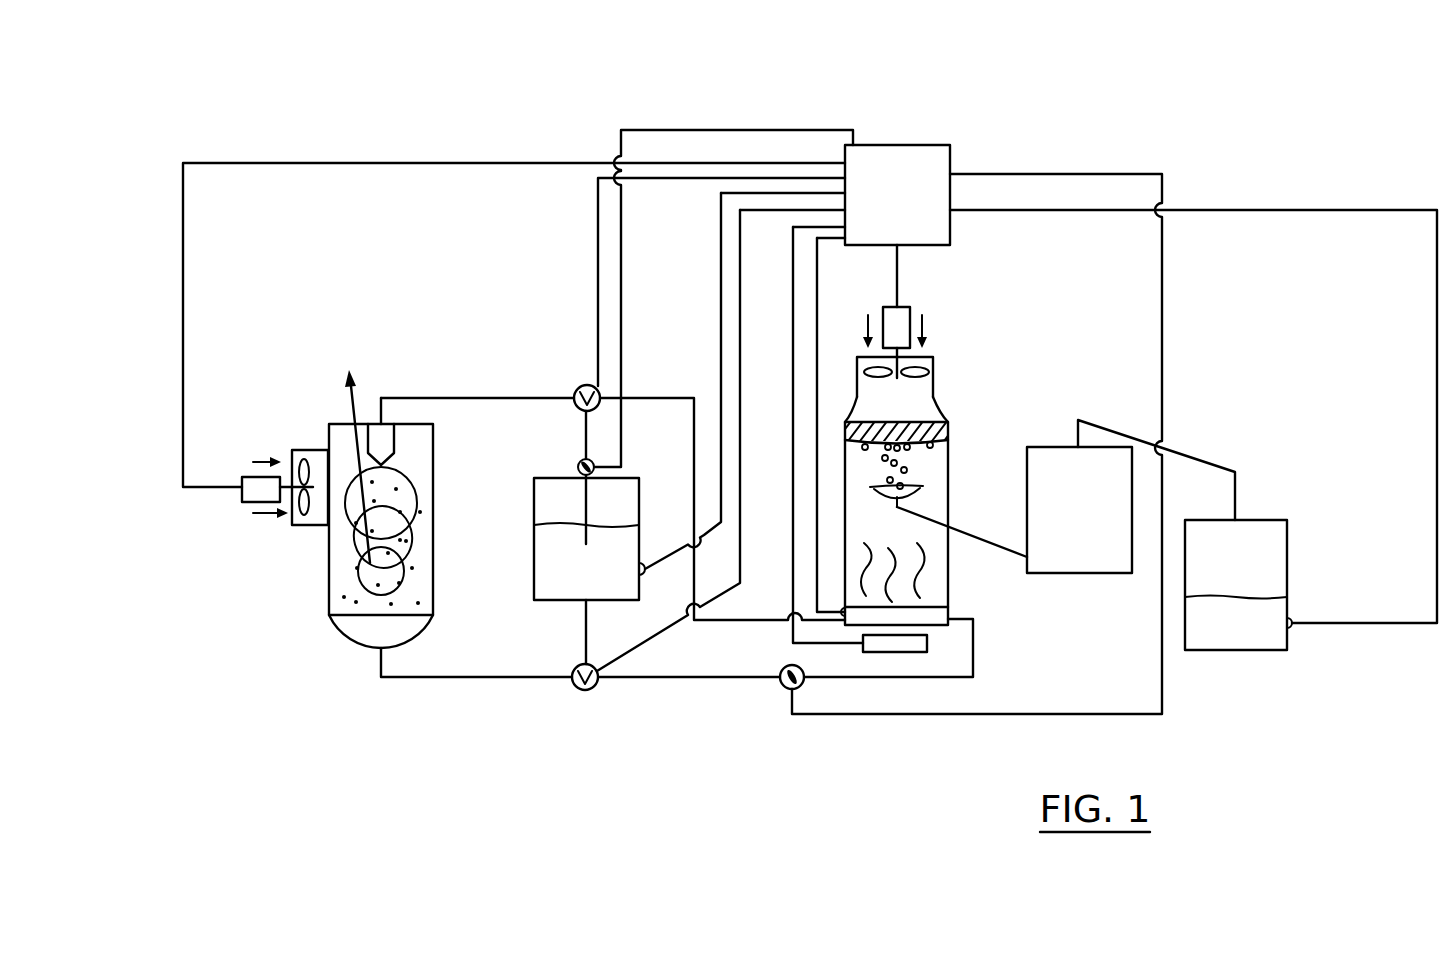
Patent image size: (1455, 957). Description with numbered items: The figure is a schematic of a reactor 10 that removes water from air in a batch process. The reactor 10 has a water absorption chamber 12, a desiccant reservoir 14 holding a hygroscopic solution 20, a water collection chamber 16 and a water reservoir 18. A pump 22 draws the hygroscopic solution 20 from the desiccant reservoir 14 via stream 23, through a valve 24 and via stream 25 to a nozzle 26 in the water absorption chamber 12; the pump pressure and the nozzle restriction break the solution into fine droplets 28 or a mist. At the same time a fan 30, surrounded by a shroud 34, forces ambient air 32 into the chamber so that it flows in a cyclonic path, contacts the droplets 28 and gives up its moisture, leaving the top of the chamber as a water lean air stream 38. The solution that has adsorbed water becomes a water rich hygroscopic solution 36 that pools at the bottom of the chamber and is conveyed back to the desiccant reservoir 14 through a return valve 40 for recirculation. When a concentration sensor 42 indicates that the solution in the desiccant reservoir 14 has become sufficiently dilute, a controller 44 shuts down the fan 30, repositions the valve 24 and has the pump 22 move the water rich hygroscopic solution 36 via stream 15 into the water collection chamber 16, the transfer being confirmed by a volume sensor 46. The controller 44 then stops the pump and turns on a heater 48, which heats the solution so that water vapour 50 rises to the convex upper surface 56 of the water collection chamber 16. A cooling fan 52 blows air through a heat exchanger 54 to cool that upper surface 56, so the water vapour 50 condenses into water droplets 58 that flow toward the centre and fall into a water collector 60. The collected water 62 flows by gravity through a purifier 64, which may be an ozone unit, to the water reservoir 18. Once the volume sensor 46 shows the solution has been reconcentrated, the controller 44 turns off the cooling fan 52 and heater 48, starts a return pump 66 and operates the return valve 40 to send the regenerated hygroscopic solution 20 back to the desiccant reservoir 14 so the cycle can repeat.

The reactor 10 is at (1089, 86).
The water absorption chamber 12 is at (328, 581).
The desiccant reservoir 14 is at (639, 496).
The stream 15 is at (676, 397).
The water collection chamber 16 is at (940, 421).
The water reservoir 18 is at (1290, 566).
The hygroscopic solution 20 is at (548, 563).
The pump 22 is at (578, 466).
The stream 23 is at (586, 428).
The valve 24 is at (586, 385).
The stream 25 is at (500, 397).
The nozzle 26 is at (390, 440).
The droplets 28 is at (350, 561).
The fan 30 is at (250, 478).
The ambient air 32 is at (262, 458).
The shroud 34 is at (312, 450).
The water rich hygroscopic solution 36 is at (351, 630).
The water lean air stream 38 is at (354, 400).
The return valve 40 is at (585, 690).
The concentration sensor 42 is at (645, 574).
The controller 44 is at (912, 145).
The volume sensor 46 is at (841, 609).
The heater 48 is at (897, 653).
The water vapour 50 is at (940, 578).
The cooling fan 52 is at (905, 312).
The heat exchanger 54 is at (946, 428).
The upper surface 56 is at (948, 447).
The water droplets 58 is at (907, 470).
The water collector 60 is at (924, 493).
The water 62 is at (1057, 560).
The purifier 64 is at (1097, 573).
The return pump 66 is at (784, 689).